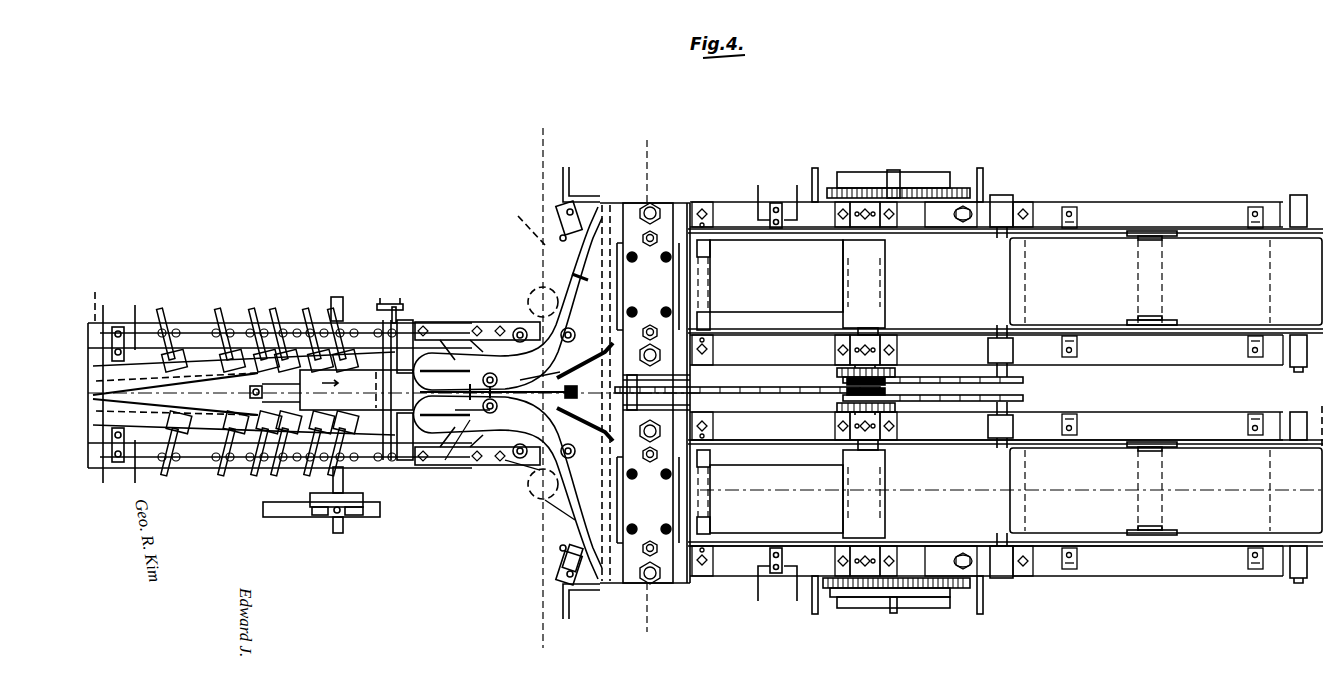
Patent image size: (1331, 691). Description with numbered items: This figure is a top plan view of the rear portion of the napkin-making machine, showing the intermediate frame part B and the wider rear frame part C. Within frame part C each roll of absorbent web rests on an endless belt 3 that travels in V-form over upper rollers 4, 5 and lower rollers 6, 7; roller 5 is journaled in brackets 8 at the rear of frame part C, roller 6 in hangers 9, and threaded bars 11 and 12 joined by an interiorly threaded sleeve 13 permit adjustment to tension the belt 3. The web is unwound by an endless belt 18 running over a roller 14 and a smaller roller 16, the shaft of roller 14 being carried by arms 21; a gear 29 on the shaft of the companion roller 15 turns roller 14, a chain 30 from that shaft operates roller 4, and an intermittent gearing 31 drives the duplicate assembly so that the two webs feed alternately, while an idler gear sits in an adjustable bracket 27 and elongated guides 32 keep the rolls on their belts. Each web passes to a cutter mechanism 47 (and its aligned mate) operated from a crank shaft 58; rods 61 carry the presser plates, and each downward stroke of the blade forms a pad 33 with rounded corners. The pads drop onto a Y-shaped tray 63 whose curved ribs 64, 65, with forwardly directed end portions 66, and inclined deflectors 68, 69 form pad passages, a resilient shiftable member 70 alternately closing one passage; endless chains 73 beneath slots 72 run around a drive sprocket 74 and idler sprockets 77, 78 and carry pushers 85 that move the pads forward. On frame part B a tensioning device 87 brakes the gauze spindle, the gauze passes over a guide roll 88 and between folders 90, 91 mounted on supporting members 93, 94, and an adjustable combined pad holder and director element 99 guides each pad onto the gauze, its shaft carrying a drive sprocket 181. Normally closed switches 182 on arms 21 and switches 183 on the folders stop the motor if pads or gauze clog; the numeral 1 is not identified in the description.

The feed conveyor 1 is at (197, 310).
The endless belt 3 is at (1040, 235).
The upper roller 4 is at (1018, 325).
The upper roller 5 is at (1282, 333).
The lower roller 6 is at (707, 360).
The lower roller 7 is at (567, 383).
The brackets 8 is at (356, 322).
The hangers 9 is at (1150, 230).
The threaded bars 11 is at (512, 392).
The threaded bars 12 is at (608, 215).
The interiorly threaded sleeve 13 is at (545, 510).
The roller 14 is at (870, 247).
The roller 15 is at (165, 520).
The roller 16 is at (712, 455).
The endless belt 18 is at (745, 265).
The arms 21 is at (758, 200).
The bracket 27 is at (930, 545).
The gear 29 is at (836, 407).
The chain 30 is at (952, 402).
The intermittent gearing 31 is at (874, 186).
The elongated guides 32 is at (1200, 228).
The pad 33 is at (525, 223).
The cutter mechanism 47 is at (683, 203).
The crank shaft 58 is at (655, 405).
The rods 61 is at (462, 440).
The Y-shaped tray 63 is at (565, 512).
The curved rib 64 is at (538, 300).
The curved rib 65 is at (530, 468).
The inner end portion 66 is at (455, 345).
The inclined deflector 68 is at (589, 364).
The inclined deflector 69 is at (591, 417).
The wall forming member 70 is at (545, 372).
The slots 72 is at (565, 545).
The endless chain 73 is at (602, 200).
The drive sprocket 74 is at (540, 300).
The idler sprocket 77 is at (470, 430).
The idler sprocket 78 is at (420, 321).
The pusher 85 is at (590, 280).
The tensioning device 87 is at (300, 517).
The roll 88 is at (396, 462).
The folder 90 is at (163, 440).
The folder 91 is at (148, 358).
The supporting member 93 is at (225, 430).
The supporting member 94 is at (198, 345).
The combined pad holder and director element 99 is at (331, 390).
The sprocket 181 is at (384, 303).
The normally closed switches 182 is at (776, 200).
The normally closed switches 183 is at (118, 326).
The intermediate frame part B is at (448, 321).
The rear frame part C is at (1090, 200).